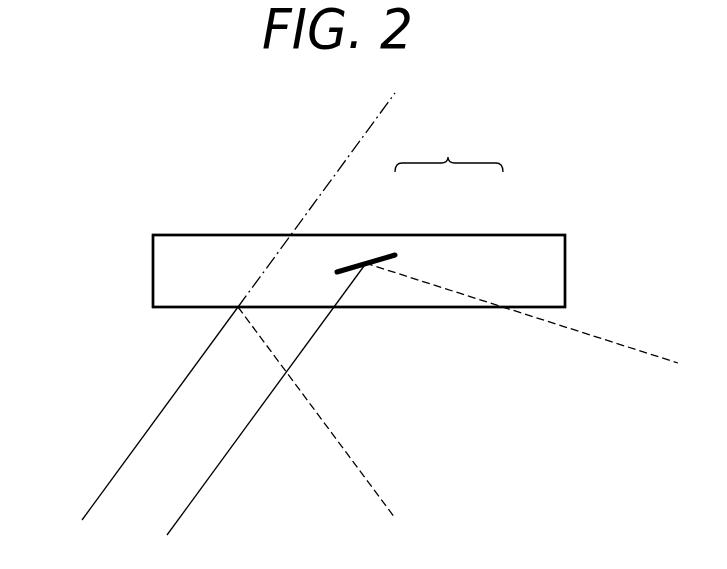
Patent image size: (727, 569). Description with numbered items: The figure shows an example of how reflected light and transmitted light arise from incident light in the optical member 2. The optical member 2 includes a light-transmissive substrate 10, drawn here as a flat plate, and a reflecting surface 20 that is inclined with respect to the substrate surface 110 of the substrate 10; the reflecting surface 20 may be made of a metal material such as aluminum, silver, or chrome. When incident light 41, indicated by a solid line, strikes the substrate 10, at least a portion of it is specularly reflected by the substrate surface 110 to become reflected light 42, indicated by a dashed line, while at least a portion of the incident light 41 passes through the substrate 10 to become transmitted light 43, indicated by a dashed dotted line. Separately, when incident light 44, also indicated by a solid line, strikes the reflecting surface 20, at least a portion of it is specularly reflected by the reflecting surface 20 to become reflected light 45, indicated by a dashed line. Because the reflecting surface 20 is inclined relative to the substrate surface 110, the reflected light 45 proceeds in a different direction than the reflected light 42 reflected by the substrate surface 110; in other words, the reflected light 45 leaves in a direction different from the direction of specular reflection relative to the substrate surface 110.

The optical member 2 is at (449, 150).
The substrate 10 is at (480, 255).
The reflecting surface 20 is at (384, 256).
The incident light 41 is at (124, 462).
The reflected light 42 is at (379, 497).
The transmitted light 43 is at (365, 133).
The incident light 44 is at (212, 475).
The reflected light 45 is at (617, 343).
The substrate surface 110 is at (133, 311).